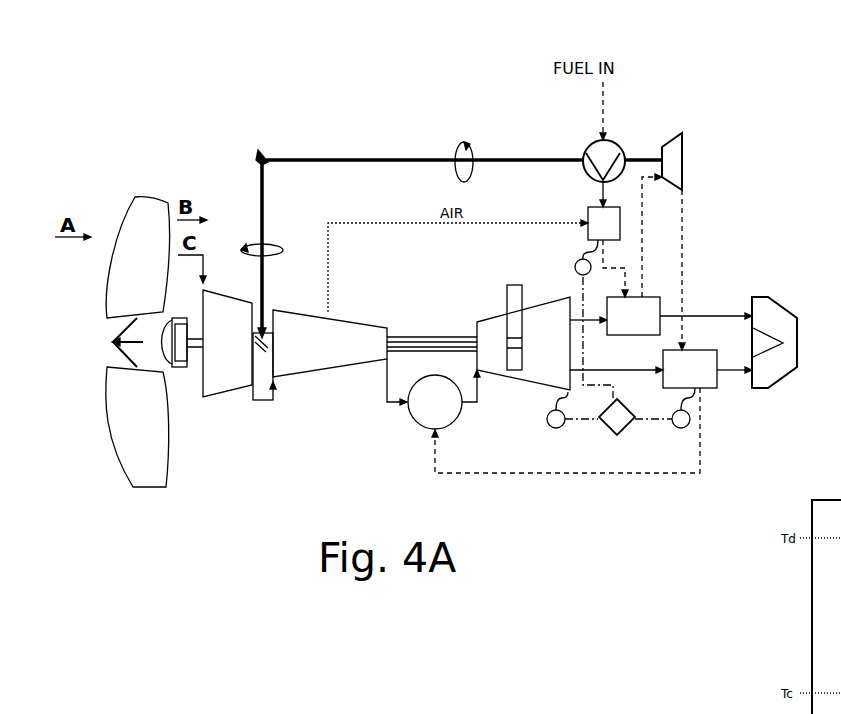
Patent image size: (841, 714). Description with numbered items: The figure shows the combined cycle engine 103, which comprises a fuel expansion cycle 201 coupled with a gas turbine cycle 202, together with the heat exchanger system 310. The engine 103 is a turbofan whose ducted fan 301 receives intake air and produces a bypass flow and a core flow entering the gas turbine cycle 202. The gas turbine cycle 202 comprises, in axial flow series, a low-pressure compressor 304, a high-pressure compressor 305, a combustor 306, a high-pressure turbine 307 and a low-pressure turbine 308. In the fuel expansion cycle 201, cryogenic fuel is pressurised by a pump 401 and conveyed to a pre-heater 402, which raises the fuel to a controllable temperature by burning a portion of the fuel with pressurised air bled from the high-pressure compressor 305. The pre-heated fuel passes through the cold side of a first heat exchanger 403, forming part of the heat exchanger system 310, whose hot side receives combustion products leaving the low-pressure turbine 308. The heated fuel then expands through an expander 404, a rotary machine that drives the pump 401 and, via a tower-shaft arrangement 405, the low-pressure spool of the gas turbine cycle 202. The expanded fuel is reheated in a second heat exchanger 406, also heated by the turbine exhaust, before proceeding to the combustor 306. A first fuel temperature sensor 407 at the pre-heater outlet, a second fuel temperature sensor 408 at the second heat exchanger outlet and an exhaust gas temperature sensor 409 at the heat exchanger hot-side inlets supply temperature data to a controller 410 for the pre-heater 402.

The engine 103 is at (172, 106).
The fuel expansion cycle 201 is at (652, 81).
The gas turbine cycle 202 is at (319, 434).
The ducted fan 301 is at (137, 217).
The low-pressure compressor 304 is at (213, 387).
The high-pressure compressor 305 is at (318, 360).
The combustor 306 is at (417, 418).
The high-pressure turbine 307 is at (490, 320).
The low-pressure turbine 308 is at (543, 375).
The heat exchanger system 310 is at (778, 378).
The pump 401 is at (594, 143).
The pre-heater 402 is at (590, 207).
The first heat exchanger 403 is at (661, 316).
The expander 404 is at (676, 150).
The tower-shaft arrangement 405 is at (258, 148).
The second heat exchanger 406 is at (592, 411).
The first fuel temperature sensor 407 is at (576, 260).
The second fuel temperature sensor 408 is at (675, 426).
The exhaust gas temperature sensor 409 is at (548, 424).
The controller 410 is at (607, 430).